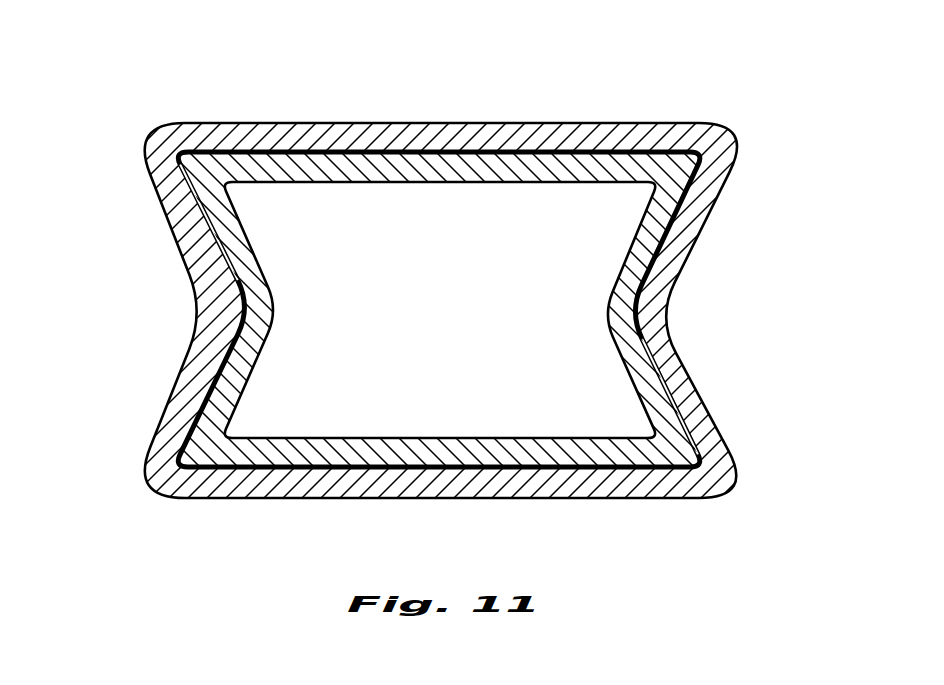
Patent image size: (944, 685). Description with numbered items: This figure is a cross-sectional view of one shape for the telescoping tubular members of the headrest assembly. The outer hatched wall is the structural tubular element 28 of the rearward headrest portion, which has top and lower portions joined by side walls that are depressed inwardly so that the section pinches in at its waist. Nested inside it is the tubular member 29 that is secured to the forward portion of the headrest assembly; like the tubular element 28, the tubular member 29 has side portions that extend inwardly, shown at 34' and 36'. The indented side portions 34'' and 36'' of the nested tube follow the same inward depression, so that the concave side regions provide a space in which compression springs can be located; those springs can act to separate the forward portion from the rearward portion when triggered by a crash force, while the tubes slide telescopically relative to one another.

The structural tubular element 28 is at (418, 122).
The tubular member 29 is at (447, 188).
The side portion 34' is at (472, 310).
The indented side portion 34'' is at (472, 310).
The side portion 36' is at (472, 310).
The indented side portion 36'' is at (472, 310).